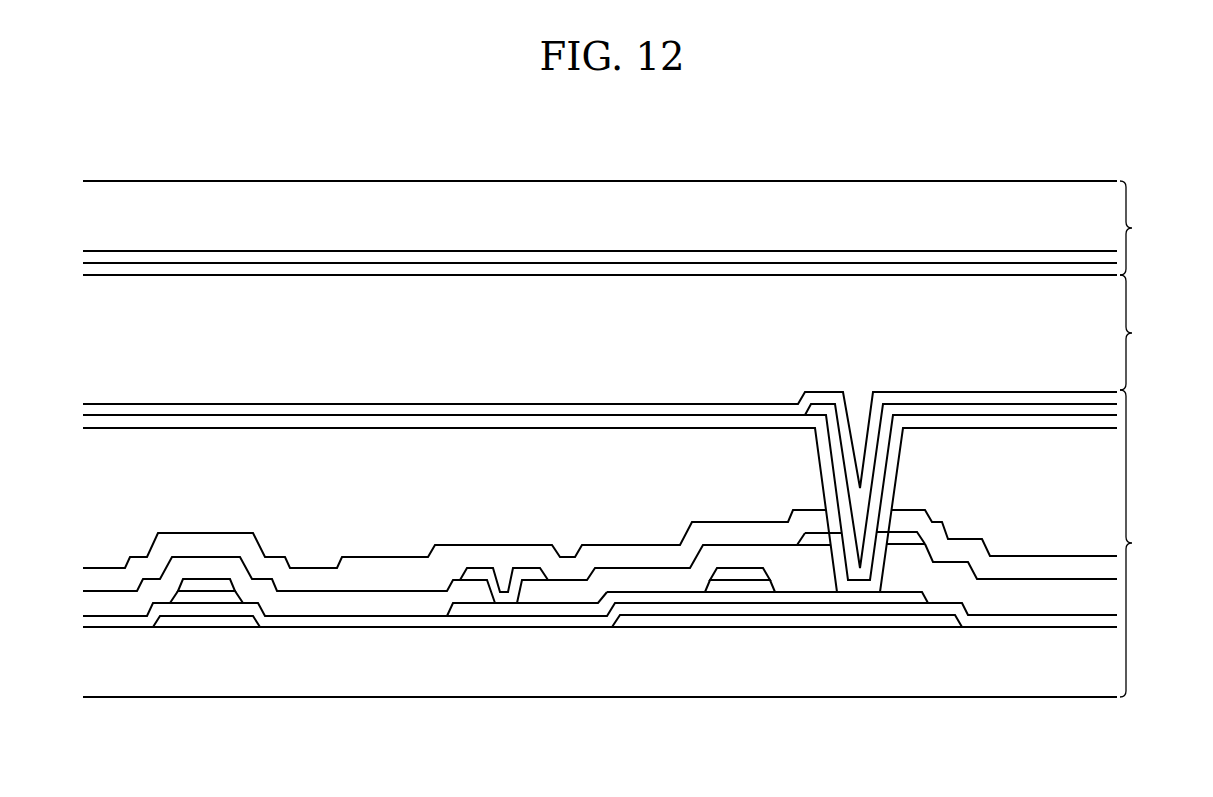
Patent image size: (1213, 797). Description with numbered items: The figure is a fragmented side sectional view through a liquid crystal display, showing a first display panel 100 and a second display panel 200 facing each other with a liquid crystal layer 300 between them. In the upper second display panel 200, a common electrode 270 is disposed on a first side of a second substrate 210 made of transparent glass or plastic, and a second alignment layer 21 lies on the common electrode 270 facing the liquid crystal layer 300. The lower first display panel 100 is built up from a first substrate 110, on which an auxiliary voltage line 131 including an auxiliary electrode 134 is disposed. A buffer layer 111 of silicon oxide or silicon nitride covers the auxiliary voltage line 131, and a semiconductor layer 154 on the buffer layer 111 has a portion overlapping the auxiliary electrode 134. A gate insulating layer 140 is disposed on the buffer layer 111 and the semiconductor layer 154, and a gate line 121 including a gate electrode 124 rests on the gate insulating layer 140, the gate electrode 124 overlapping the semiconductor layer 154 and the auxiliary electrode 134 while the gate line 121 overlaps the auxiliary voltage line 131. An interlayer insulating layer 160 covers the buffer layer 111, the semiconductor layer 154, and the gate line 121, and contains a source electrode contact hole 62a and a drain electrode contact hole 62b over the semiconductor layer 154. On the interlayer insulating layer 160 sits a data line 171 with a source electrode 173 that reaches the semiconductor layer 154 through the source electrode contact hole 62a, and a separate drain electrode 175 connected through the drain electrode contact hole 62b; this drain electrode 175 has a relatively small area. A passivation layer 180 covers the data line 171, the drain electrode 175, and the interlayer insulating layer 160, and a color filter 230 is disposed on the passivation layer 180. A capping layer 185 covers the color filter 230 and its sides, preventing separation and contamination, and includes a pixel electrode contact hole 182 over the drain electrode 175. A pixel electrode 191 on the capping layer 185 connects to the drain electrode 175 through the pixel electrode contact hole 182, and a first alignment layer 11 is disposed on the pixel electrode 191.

The second display panel 200 is at (1145, 228).
The second substrate 210 is at (547, 200).
The common electrode 270 is at (667, 257).
The second alignment layer 21 is at (783, 268).
The liquid crystal layer 300 is at (1145, 332).
The first display panel 100 is at (1145, 543).
The first alignment layer 11 is at (1072, 398).
The pixel electrode 191 is at (1010, 410).
The capping layer 185 is at (958, 423).
The pixel electrode contact hole 182 is at (887, 462).
The color filter 230 is at (1083, 523).
The passivation layer 180 is at (1012, 568).
The drain electrode 175 is at (820, 538).
The interlayer insulating layer 160 is at (1048, 598).
The data line 171 is at (478, 573).
The source electrode 173 is at (532, 573).
The source electrode contact hole 62a is at (520, 592).
The drain electrode contact hole 62b is at (887, 567).
The semiconductor layer 154 is at (633, 595).
The auxiliary electrode 134 is at (683, 620).
The buffer layer 111 is at (982, 620).
The first substrate 110 is at (580, 670).
The auxiliary voltage line 131 is at (207, 620).
The gate line 121 is at (202, 585).
The gate insulating layer 140 is at (223, 597).
The gate electrode 124 is at (748, 573).